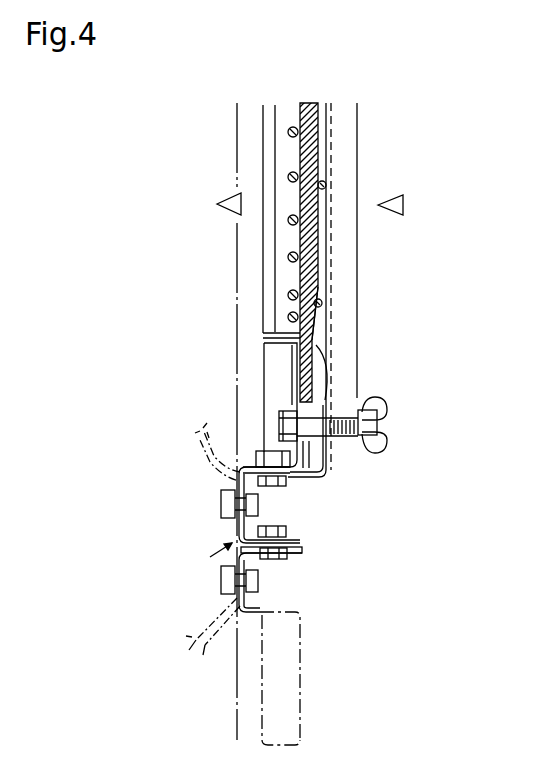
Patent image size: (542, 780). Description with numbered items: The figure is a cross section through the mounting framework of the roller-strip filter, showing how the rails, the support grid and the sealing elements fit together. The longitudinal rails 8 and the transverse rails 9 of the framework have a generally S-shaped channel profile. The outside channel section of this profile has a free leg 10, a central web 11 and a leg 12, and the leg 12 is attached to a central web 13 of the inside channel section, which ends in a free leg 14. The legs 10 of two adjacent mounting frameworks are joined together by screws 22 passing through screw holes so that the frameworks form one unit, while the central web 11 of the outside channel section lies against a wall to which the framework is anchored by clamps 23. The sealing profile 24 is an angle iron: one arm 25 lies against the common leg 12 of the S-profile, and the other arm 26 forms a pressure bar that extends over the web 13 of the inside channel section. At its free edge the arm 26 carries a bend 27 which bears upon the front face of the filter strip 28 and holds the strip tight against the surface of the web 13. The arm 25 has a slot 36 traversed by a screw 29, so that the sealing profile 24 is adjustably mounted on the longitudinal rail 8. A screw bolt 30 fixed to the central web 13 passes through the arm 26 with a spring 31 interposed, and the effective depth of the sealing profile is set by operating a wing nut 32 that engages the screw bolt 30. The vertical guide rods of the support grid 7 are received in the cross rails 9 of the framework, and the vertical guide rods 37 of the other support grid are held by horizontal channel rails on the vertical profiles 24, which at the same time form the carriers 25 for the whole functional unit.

The support grid 7 is at (300, 254).
The longitudinal rail 8 is at (212, 562).
The transverse rail 9 is at (263, 247).
The free leg 10 is at (303, 545).
The central web 11 is at (237, 533).
The leg 12 is at (222, 463).
The central web 13 is at (297, 375).
The free leg 14 is at (280, 340).
The screw 22 is at (222, 513).
The clamp 23 is at (217, 467).
The sealing profile 24 is at (330, 463).
The arm 25 is at (312, 477).
The arm 26 is at (322, 378).
The bend 27 is at (333, 347).
The filter strip 28 is at (327, 155).
The screw 29 is at (258, 457).
The screw bolt 30 is at (283, 414).
The spring 31 is at (355, 400).
The wing nut 32 is at (383, 405).
The slot 36 is at (290, 478).
The vertical guide rod 37 is at (322, 185).